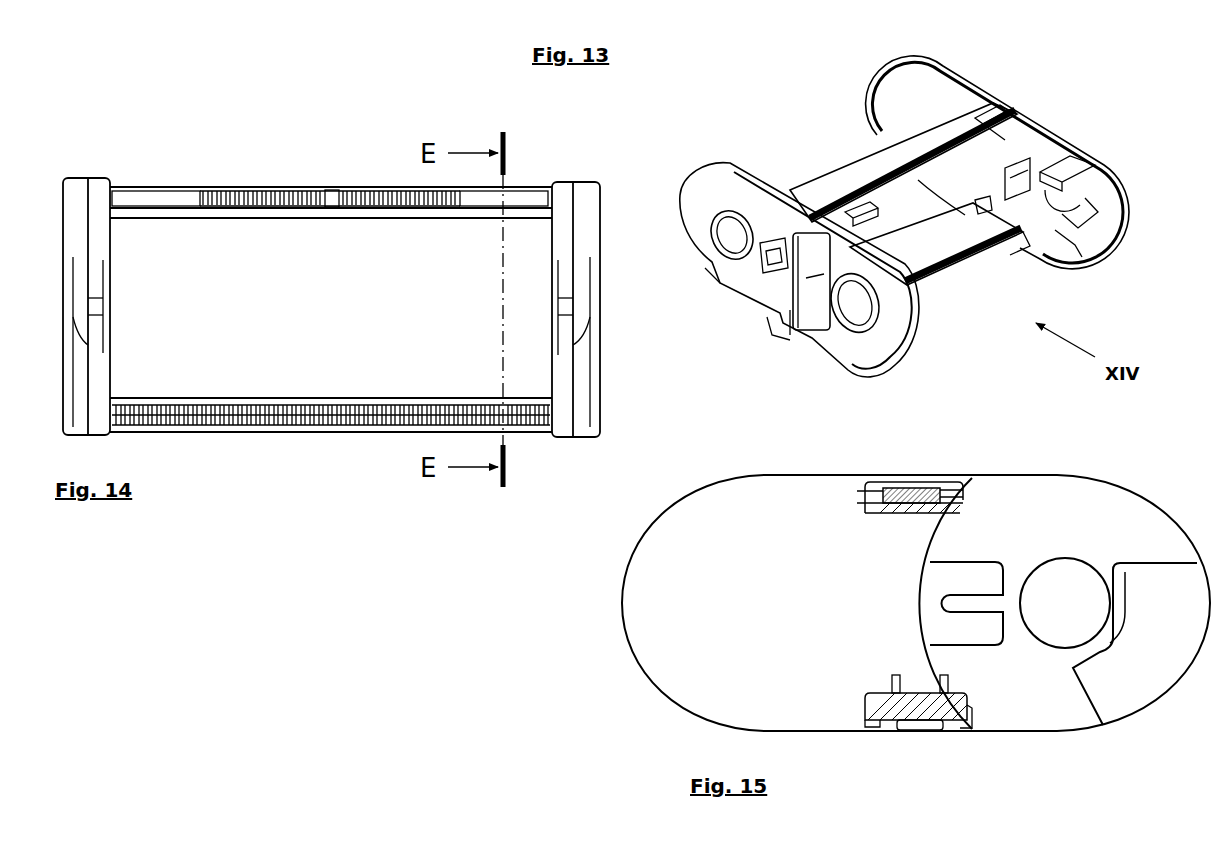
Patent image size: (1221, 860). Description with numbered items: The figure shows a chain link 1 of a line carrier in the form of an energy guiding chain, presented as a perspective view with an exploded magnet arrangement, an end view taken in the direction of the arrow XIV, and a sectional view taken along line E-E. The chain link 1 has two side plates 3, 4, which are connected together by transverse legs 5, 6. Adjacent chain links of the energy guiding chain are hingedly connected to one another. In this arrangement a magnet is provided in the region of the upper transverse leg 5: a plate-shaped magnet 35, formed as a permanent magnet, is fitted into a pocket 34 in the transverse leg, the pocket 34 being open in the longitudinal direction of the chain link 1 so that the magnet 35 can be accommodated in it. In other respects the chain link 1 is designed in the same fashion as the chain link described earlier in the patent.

In FIG. 14, the chain link 1 is at (172, 142).
In FIG. 13, the chain link 1 is at (1104, 96).
In FIG. 15, the chain link 1 is at (1056, 754).
In FIG. 14, the side plate 3 is at (63, 245).
In FIG. 13, the side plate 3 is at (740, 300).
In FIG. 14, the side plate 4 is at (600, 232).
In FIG. 13, the side plate 4 is at (965, 83).
In FIG. 15, the side plate 4 is at (1153, 505).
In FIG. 14, the transverse leg 5 is at (295, 187).
In FIG. 13, the transverse leg 5 is at (866, 170).
In FIG. 15, the transverse leg 5 is at (925, 483).
In FIG. 14, the transverse leg 6 is at (293, 430).
In FIG. 13, the transverse leg 6 is at (940, 272).
In FIG. 15, the transverse leg 6 is at (885, 718).
In FIG. 14, the pocket 34 is at (152, 200).
In FIG. 13, the pocket 34 is at (1000, 125).
In FIG. 13, the magnet 35 is at (872, 214).
In FIG. 15, the magnet 35 is at (893, 485).